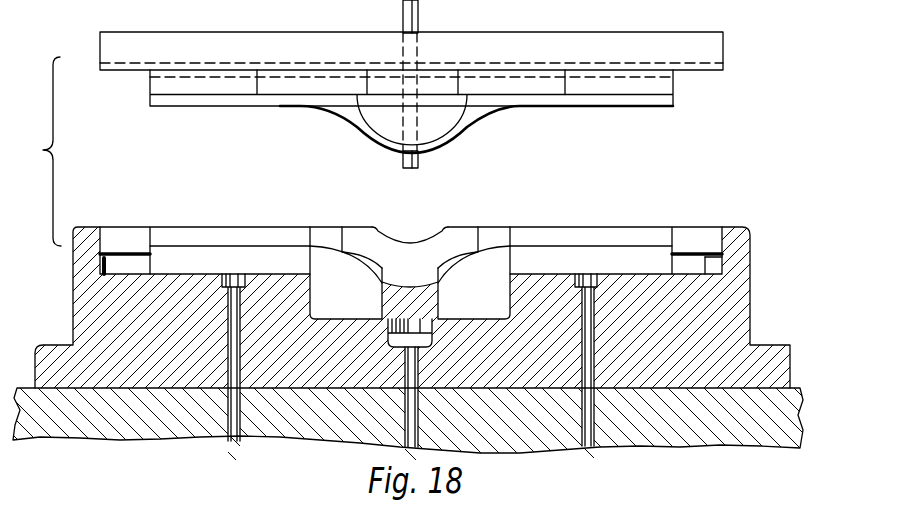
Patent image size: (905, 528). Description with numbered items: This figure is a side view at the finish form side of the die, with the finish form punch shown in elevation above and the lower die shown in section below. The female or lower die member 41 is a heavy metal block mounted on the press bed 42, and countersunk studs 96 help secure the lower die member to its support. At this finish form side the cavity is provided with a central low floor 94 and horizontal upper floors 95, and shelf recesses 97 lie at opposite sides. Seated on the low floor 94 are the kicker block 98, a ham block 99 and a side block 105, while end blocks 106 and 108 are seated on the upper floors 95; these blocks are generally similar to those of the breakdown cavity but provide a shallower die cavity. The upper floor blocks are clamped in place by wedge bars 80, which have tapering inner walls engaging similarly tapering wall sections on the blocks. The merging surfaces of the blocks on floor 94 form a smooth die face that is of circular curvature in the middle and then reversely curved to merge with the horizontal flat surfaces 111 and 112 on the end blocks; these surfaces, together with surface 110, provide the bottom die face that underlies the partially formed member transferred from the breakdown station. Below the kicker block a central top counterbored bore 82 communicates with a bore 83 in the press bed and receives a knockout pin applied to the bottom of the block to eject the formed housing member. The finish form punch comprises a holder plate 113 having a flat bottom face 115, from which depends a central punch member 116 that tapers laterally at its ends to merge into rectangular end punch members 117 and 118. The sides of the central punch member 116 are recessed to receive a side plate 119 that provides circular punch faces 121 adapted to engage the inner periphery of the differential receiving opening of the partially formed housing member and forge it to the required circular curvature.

The lower die member 41 is at (81, 288).
The press bed 42 is at (539, 448).
The wedge bars 80 is at (140, 236).
The central top counterbored bore 82 is at (415, 362).
The bore in press bed 83 is at (415, 420).
The central low floor 94 is at (474, 325).
The horizontal upper floors 95 is at (715, 262).
The countersunk studs 96 is at (232, 329).
The shelf recesses 97 is at (113, 249).
The kicker block 98 is at (392, 292).
The ham block 99 is at (328, 268).
The side block 105 is at (448, 239).
The end block 106 is at (200, 237).
The end block 108 is at (555, 242).
The die face surface 110 is at (378, 250).
The horizontal flat surface 111 is at (617, 247).
The horizontal flat surface 112 is at (246, 258).
The holder plate 113 is at (124, 43).
The flat bottom face 115 is at (127, 72).
The central punch member 116 is at (335, 108).
The end punch member 117 is at (197, 99).
The end punch member 118 is at (632, 103).
The side plate 119 is at (448, 110).
The circular punch faces 121 is at (437, 137).